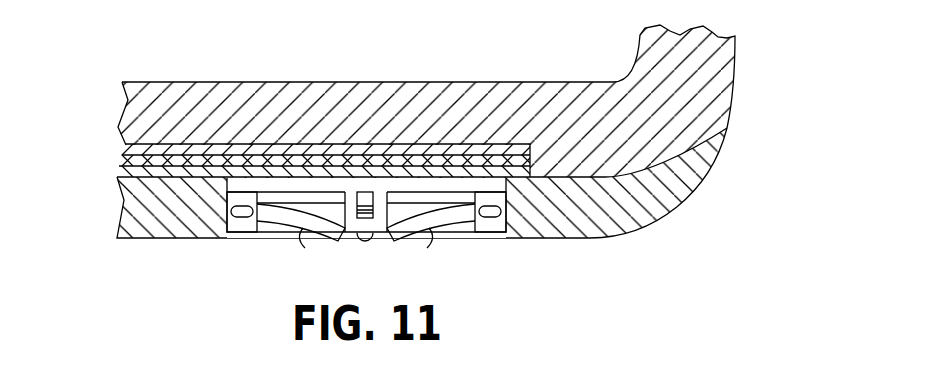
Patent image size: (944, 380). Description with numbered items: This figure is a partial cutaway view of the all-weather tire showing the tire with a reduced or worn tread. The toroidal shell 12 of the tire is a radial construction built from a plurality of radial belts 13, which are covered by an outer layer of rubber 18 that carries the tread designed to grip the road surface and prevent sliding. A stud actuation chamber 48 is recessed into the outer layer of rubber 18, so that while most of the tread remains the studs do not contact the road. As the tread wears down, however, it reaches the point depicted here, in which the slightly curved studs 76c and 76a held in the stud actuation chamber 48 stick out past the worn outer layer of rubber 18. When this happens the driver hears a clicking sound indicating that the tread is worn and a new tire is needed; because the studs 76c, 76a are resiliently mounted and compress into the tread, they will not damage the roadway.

The toroidal shell 12 is at (737, 76).
The radial belts 13 is at (108, 140).
The outer layer of rubber 18 is at (667, 209).
The stud actuation chamber 48 is at (508, 204).
The stud 76c is at (300, 239).
The stud 76a is at (432, 239).